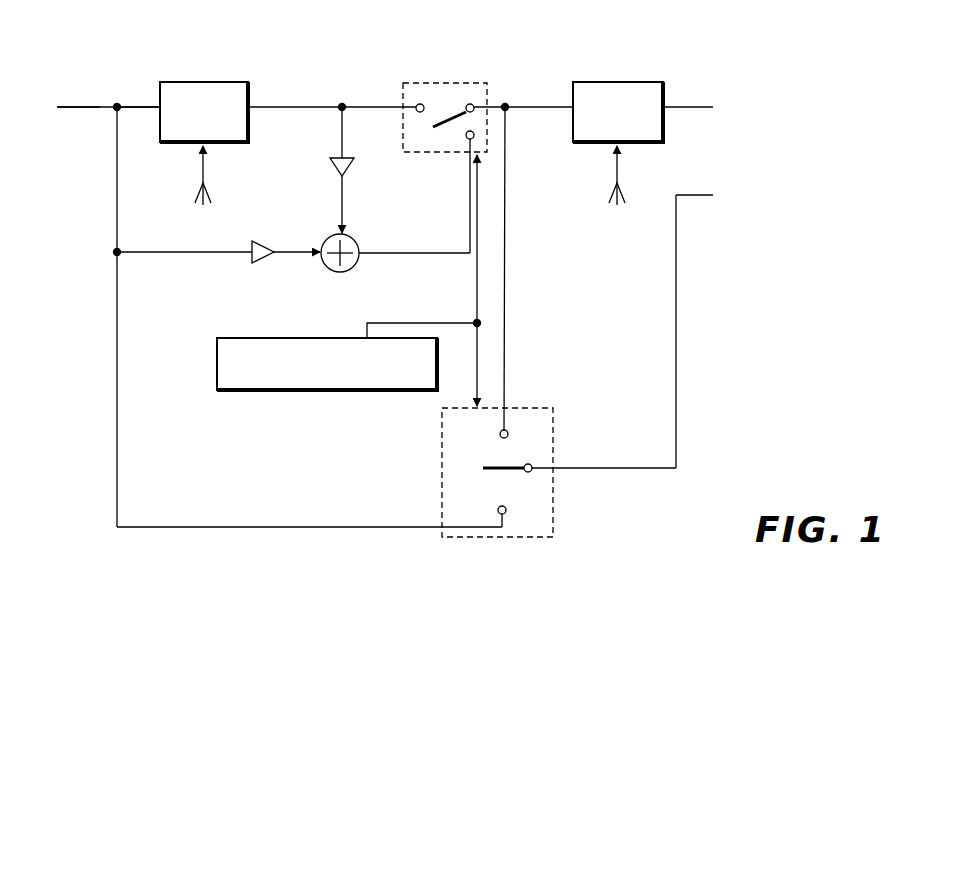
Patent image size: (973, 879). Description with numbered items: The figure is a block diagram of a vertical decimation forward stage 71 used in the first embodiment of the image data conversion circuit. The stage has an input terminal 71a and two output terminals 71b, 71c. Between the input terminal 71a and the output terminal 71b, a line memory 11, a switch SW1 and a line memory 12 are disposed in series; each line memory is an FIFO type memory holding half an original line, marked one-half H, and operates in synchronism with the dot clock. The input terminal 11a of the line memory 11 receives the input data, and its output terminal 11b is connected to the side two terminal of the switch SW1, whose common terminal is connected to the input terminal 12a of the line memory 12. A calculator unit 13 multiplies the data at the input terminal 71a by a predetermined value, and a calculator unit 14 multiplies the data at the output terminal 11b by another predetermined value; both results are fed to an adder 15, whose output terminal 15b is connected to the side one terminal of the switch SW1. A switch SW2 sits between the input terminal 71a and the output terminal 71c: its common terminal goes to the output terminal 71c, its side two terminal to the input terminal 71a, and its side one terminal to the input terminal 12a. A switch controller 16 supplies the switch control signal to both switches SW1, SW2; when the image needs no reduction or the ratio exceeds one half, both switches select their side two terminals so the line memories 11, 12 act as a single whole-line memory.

The vertical decimation forward stage 71 is at (741, 341).
The input terminal 71a is at (88, 105).
The input line of first 1/2H delay circuit 11a is at (135, 105).
The line memory 11 is at (212, 81).
The output terminal of the line memory 11b is at (298, 105).
The switch SW1 is at (418, 83).
The input terminal of the line memory 12a is at (540, 105).
The line memory 12 is at (612, 81).
The output terminal 71b is at (703, 105).
The output terminal 71c is at (702, 193).
The calculator unit 14 is at (351, 167).
The calculator unit 13 is at (258, 265).
The adder 15 is at (337, 273).
The output terminal of the adder 15b is at (420, 252).
The switch controller 16 is at (335, 393).
The switch SW2 is at (555, 514).